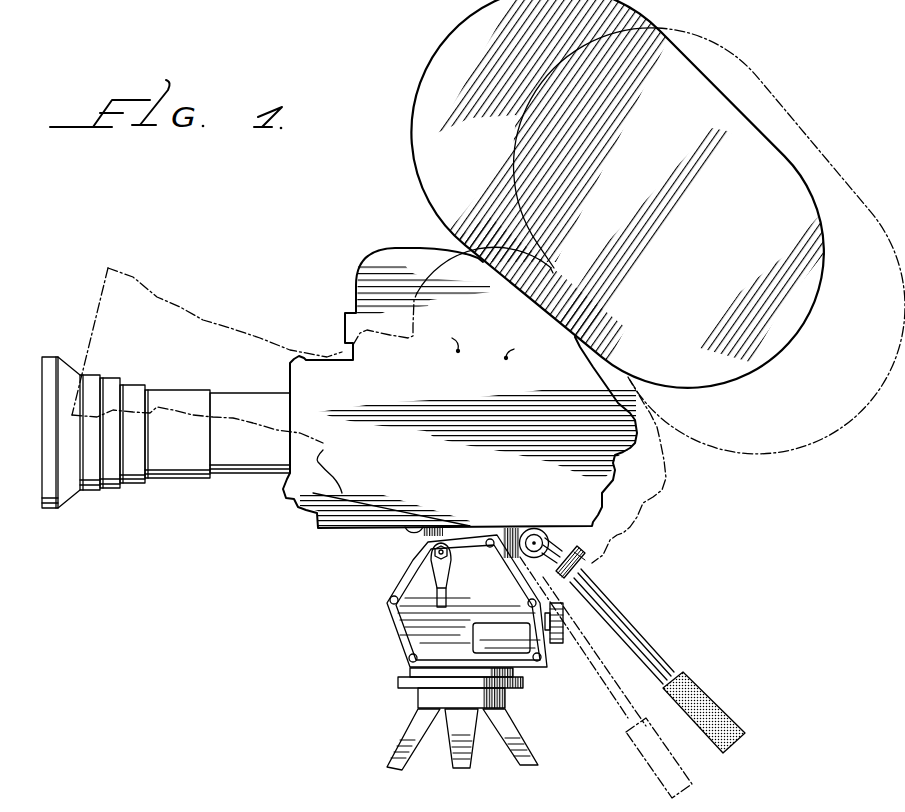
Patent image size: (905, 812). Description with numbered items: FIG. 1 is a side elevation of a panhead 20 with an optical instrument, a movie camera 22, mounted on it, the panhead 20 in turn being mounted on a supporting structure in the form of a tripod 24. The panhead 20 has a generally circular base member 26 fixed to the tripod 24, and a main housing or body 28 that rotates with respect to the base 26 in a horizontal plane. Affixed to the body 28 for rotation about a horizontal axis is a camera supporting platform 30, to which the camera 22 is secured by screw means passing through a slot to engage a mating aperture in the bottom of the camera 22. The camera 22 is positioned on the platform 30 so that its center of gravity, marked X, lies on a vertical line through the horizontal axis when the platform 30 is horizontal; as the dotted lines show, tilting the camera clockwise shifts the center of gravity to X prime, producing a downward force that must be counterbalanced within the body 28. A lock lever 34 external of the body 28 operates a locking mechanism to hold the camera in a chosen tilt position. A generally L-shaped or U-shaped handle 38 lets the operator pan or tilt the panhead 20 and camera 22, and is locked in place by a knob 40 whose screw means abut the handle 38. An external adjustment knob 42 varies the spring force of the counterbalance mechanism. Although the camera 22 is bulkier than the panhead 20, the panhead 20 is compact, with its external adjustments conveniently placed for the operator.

The panhead 20 is at (352, 607).
The movie camera 22 is at (323, 443).
The tripod 24 is at (478, 735).
The base member 26 is at (440, 670).
The main housing or body 28 is at (396, 633).
The camera supporting platform 30 is at (417, 532).
The lock lever 34 is at (432, 573).
The handle 38 is at (640, 681).
The knob 40 is at (599, 561).
The external adjustment knob 42 is at (566, 610).